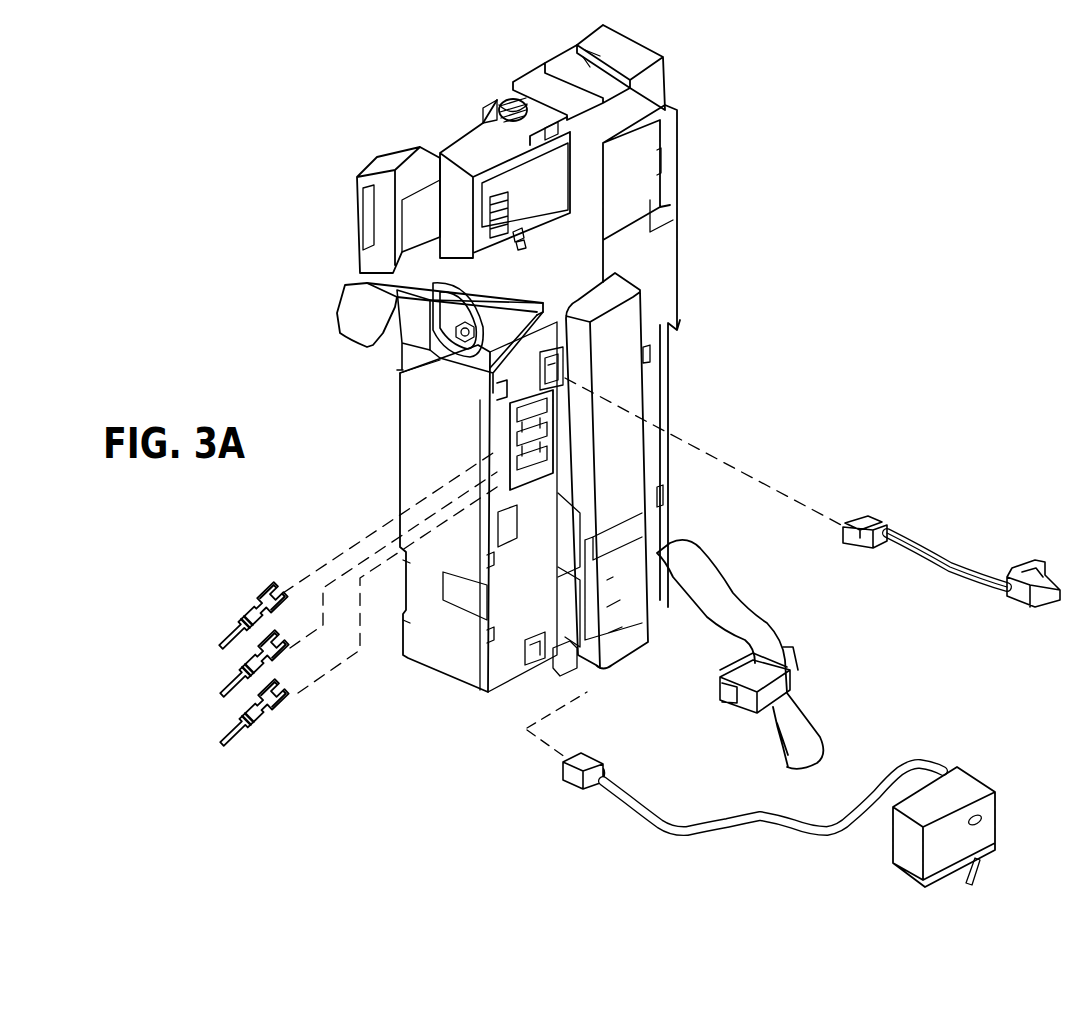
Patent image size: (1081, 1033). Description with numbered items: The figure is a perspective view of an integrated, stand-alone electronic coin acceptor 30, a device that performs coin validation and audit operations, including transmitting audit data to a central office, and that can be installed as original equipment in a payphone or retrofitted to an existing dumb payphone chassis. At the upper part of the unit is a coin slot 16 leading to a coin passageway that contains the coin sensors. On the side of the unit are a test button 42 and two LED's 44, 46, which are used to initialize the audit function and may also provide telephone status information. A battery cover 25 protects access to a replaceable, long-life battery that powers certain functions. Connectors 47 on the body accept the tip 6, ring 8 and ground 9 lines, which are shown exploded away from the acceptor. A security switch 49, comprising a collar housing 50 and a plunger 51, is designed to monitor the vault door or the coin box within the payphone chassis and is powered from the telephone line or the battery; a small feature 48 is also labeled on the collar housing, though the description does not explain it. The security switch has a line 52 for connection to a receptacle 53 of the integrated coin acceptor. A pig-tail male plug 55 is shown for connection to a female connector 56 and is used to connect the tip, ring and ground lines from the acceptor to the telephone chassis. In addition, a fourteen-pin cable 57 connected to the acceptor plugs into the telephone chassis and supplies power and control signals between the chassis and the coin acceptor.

The integrated coin acceptor 30 is at (412, 92).
The coin slot 16 is at (367, 218).
The LED 44 is at (490, 200).
The LED 46 is at (520, 218).
The test button 42 is at (522, 247).
The female connector 56 is at (558, 368).
The connectors 47 is at (517, 427).
The receptacle 53 is at (563, 672).
The battery cover 25 is at (630, 620).
The ring line 8 is at (232, 632).
The tip line 6 is at (223, 687).
The ground line 9 is at (223, 742).
The pig-tail male plug 55 is at (863, 518).
The 14-pin cable 57 is at (750, 620).
The security switch 49 is at (942, 742).
The line 52 is at (628, 787).
The collar housing 50 is at (967, 783).
The indicator aperture 48 is at (982, 823).
The plunger 51 is at (978, 875).